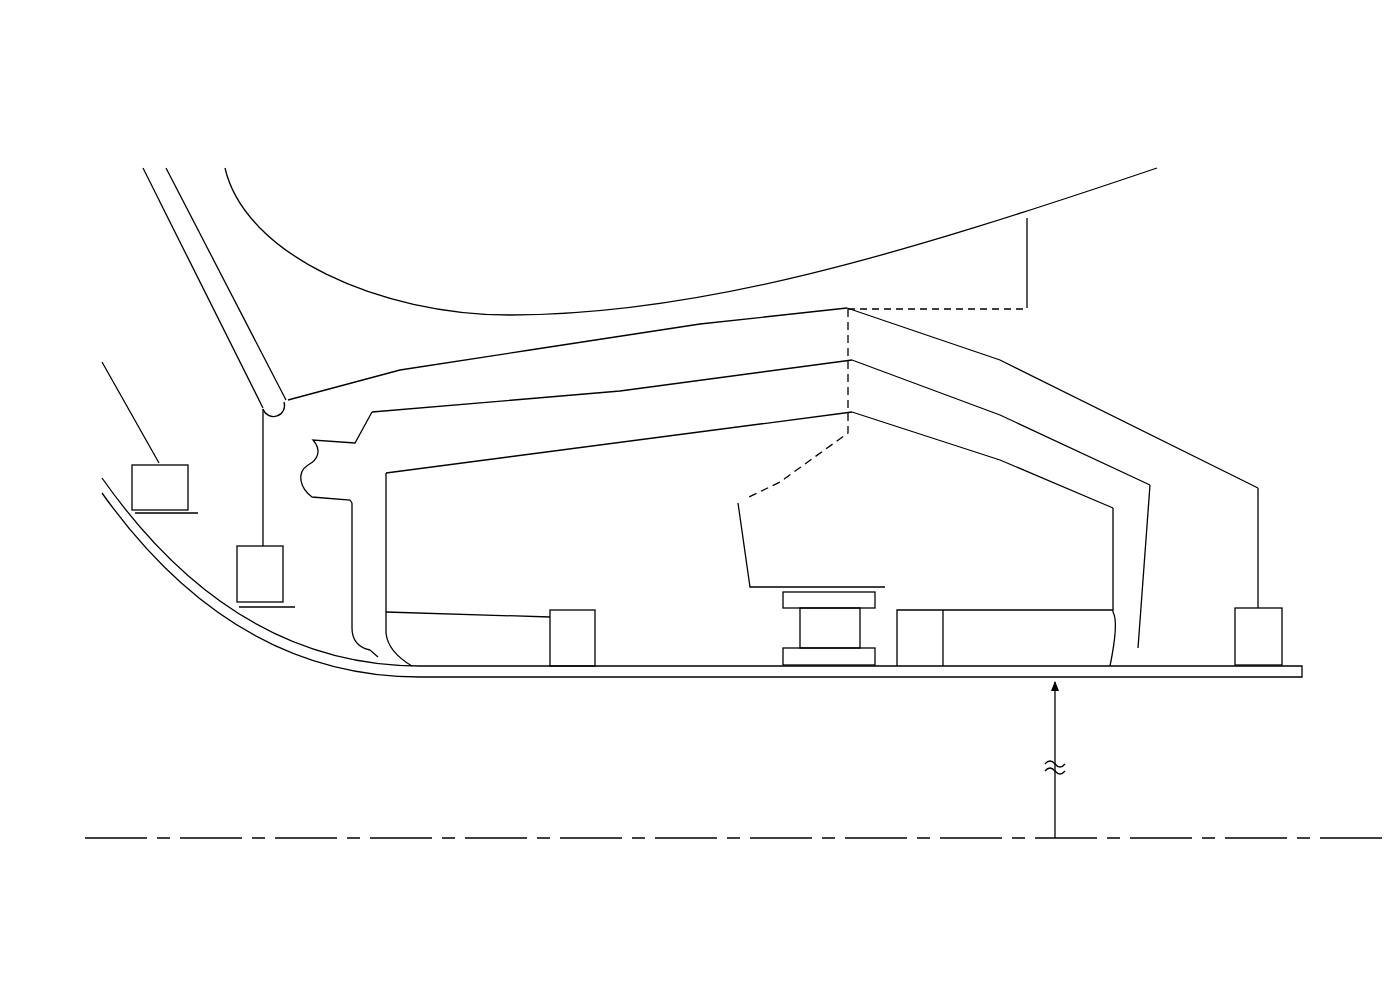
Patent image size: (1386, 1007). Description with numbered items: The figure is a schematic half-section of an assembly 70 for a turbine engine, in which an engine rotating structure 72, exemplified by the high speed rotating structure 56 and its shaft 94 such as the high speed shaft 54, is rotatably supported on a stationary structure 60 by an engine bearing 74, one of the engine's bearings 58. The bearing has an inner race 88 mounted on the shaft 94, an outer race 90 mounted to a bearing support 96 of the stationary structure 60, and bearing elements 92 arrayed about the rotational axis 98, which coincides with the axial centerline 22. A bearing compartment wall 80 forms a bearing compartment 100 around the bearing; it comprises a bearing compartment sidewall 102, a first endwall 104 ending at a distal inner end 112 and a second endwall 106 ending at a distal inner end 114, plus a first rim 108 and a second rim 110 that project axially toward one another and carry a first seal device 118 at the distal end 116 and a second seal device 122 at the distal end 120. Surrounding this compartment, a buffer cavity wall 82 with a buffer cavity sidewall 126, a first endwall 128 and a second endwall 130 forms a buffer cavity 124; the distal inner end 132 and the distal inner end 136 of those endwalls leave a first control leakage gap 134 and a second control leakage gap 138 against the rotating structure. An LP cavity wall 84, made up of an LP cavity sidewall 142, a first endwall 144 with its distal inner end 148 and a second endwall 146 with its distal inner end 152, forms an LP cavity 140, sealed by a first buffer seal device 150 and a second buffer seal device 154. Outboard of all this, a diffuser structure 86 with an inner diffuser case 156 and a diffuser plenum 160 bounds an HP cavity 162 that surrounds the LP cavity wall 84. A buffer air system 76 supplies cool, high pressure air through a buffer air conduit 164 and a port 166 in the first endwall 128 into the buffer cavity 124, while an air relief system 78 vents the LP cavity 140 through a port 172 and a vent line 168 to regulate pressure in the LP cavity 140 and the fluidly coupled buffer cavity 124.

The axial centerline 22 is at (735, 790).
The rotational axis 98 is at (105, 838).
The high speed shaft 54 is at (861, 707).
The shaft 94 is at (663, 677).
The high speed rotating structure 56 is at (255, 577).
The engine rotating structure 72 is at (170, 570).
The bearings 58 is at (751, 686).
The engine bearing 74 is at (766, 640).
The stationary structure 60 is at (701, 206).
The assembly 70 is at (1252, 92).
The buffer air system 76 is at (330, 432).
The air relief system 78 is at (189, 296).
The bearing compartment wall 80 is at (658, 443).
The buffer cavity wall 82 is at (1032, 425).
The LP cavity wall 84 is at (1123, 413).
The diffuser structure 86 is at (1122, 192).
The bearing inner race 88 is at (848, 660).
The bearing outer race 90 is at (811, 526).
The bearing elements 92 is at (829, 667).
The bearing support 96 is at (785, 482).
The bearing compartment 100 is at (517, 591).
The bearing compartment sidewall 102 is at (812, 417).
The bearing compartment first endwall 104 is at (433, 595).
The bearing compartment second endwall 106 is at (1072, 623).
The bearing compartment first endwall rim 108 is at (488, 612).
The bearing compartment second endwall rim 110 is at (1005, 599).
The distal inner end 112 is at (412, 665).
The distal inner end 114 is at (1117, 645).
The distal end 116 is at (607, 604).
The bearing compartment first seal device 118 is at (595, 640).
The distal end 120 is at (973, 599).
The bearing compartment second seal device 122 is at (930, 640).
The buffer cavity 124 is at (754, 551).
The buffer cavity sidewall 126 is at (873, 365).
The buffer cavity first endwall 128 is at (368, 531).
The buffer cavity second endwall 130 is at (1177, 566).
The distal inner end 132 is at (378, 657).
The first control leakage gap 134 is at (348, 640).
The distal inner end 136 is at (1142, 648).
The second control leakage gap 138 is at (1135, 658).
The LP cavity 140 is at (822, 517).
The LP cavity sidewall 142 is at (877, 319).
The LP cavity first endwall 144 is at (262, 490).
The LP cavity second endwall 146 is at (1281, 548).
The distal inner end 148 is at (232, 590).
The first buffer seal device 150 is at (243, 585).
The distal inner end 152 is at (1258, 608).
The second buffer seal device 154 is at (1270, 638).
The inner diffuser case 156 is at (701, 241).
The diffuser plenum 160 is at (666, 240).
The HP cavity 162 is at (1130, 304).
The buffer air conduit 164 is at (333, 460).
The port 166 is at (348, 466).
The vent line 168 is at (191, 262).
The port 172 is at (262, 418).